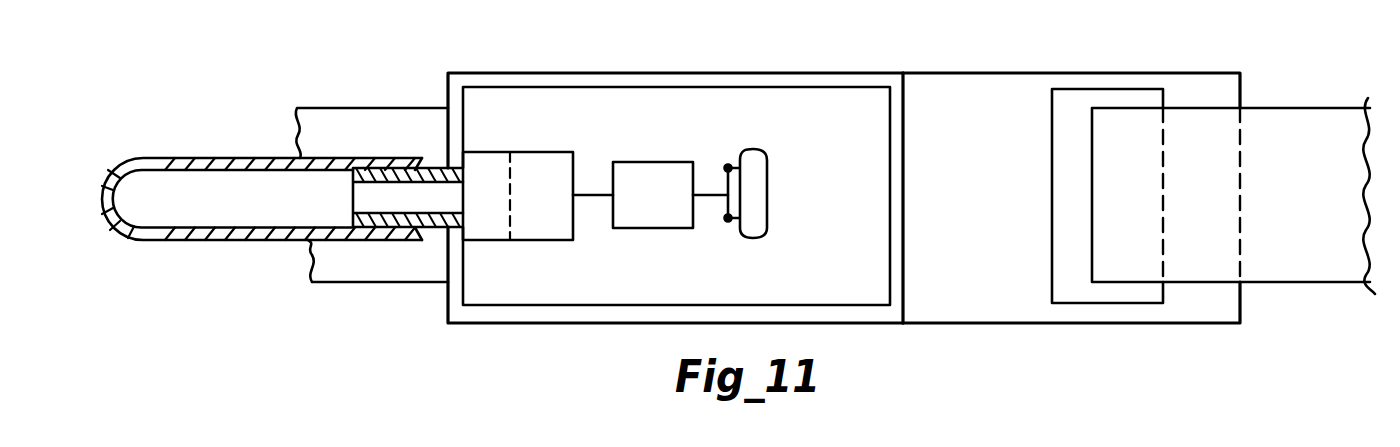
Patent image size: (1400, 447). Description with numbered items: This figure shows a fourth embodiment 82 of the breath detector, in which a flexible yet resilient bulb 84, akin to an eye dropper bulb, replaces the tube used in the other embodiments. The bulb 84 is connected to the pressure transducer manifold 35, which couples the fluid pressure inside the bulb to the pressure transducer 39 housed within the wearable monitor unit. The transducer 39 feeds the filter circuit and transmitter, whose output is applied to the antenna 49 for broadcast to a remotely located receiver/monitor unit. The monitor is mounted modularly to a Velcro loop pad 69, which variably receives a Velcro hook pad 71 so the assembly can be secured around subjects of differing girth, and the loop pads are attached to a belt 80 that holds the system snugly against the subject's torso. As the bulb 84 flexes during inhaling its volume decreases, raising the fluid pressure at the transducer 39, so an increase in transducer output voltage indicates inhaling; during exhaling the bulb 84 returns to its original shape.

The pressure transducer manifold 35 is at (490, 225).
The pressure transducer 39 is at (533, 204).
The antenna 49 is at (768, 168).
The loop pad 69 is at (1005, 90).
The hook pad 71 is at (1080, 98).
The belt 80 is at (368, 107).
The embodiment 82 is at (844, 186).
The bulb 84 is at (216, 116).